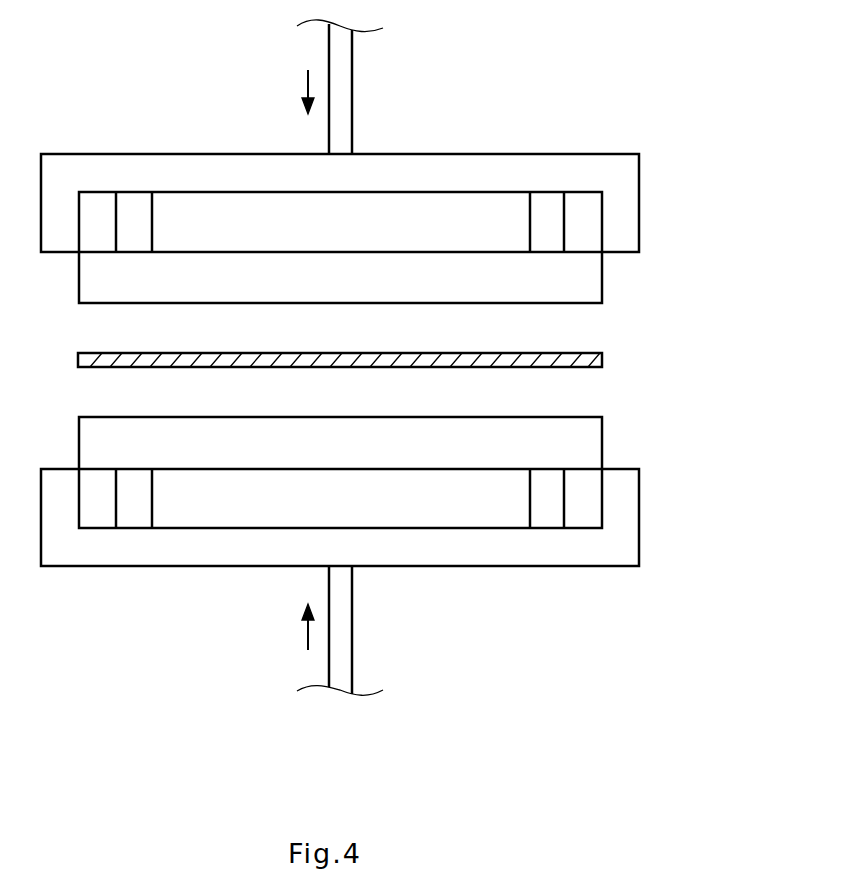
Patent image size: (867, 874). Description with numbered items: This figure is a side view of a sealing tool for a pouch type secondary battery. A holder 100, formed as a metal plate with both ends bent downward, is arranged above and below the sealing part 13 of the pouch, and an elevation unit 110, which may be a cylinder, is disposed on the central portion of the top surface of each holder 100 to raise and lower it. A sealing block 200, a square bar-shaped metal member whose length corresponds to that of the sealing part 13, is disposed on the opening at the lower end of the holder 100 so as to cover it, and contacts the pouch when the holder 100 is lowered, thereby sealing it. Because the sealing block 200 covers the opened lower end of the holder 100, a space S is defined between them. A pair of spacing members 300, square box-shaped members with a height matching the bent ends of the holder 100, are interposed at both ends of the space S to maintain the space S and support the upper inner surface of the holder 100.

The holder 100 is at (520, 165).
The elevation unit 110 is at (345, 82).
The sealing block 200 is at (590, 284).
The spacing member 300 is at (553, 221).
The sealing part 13 is at (600, 356).
The space S is at (216, 218).